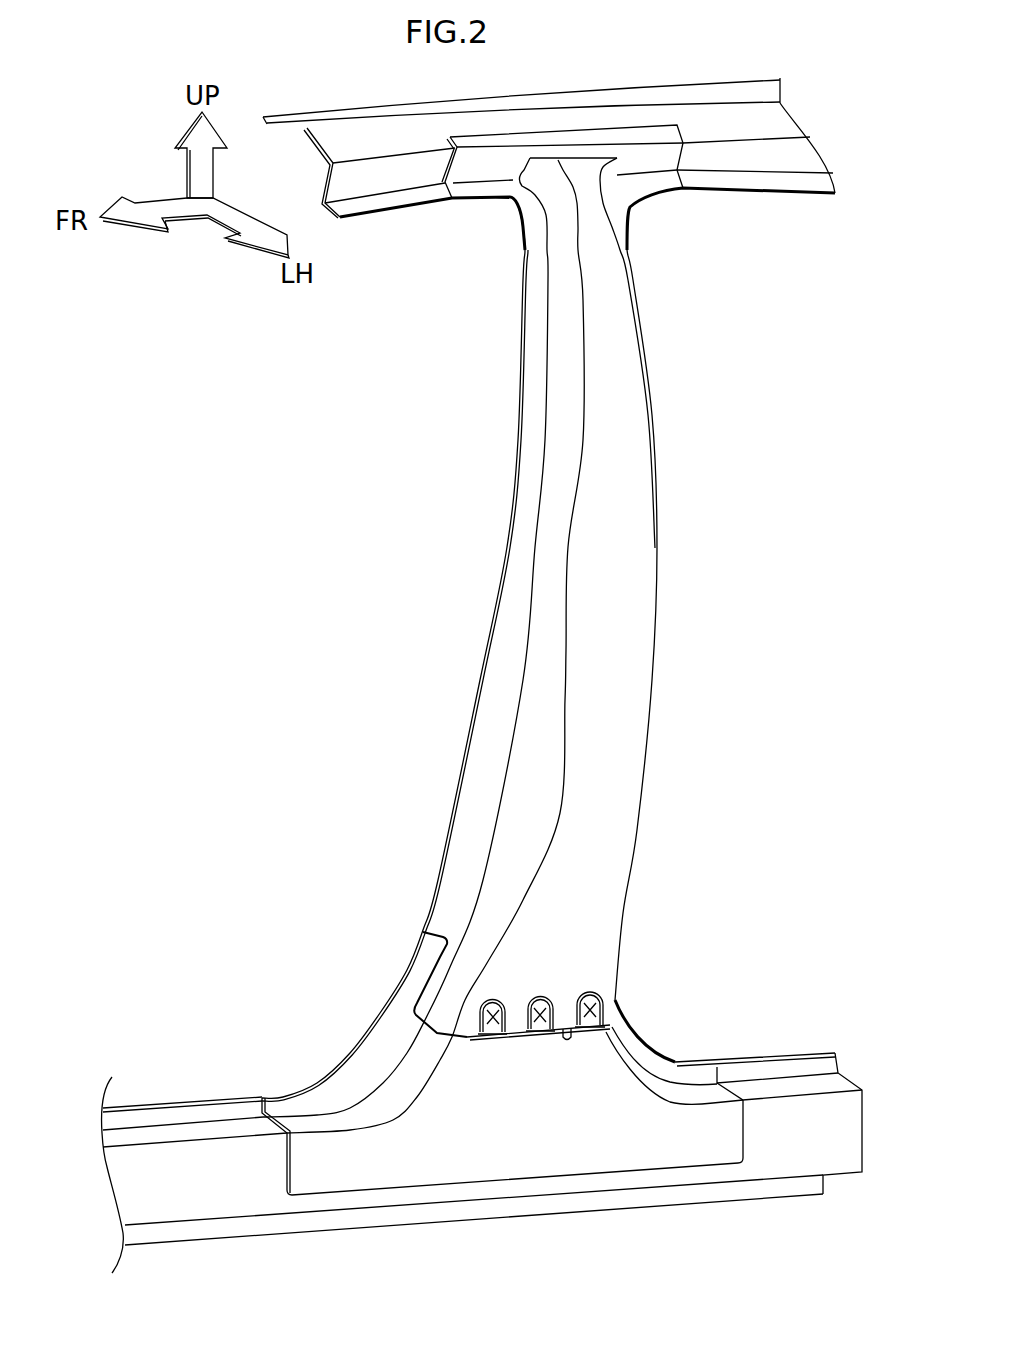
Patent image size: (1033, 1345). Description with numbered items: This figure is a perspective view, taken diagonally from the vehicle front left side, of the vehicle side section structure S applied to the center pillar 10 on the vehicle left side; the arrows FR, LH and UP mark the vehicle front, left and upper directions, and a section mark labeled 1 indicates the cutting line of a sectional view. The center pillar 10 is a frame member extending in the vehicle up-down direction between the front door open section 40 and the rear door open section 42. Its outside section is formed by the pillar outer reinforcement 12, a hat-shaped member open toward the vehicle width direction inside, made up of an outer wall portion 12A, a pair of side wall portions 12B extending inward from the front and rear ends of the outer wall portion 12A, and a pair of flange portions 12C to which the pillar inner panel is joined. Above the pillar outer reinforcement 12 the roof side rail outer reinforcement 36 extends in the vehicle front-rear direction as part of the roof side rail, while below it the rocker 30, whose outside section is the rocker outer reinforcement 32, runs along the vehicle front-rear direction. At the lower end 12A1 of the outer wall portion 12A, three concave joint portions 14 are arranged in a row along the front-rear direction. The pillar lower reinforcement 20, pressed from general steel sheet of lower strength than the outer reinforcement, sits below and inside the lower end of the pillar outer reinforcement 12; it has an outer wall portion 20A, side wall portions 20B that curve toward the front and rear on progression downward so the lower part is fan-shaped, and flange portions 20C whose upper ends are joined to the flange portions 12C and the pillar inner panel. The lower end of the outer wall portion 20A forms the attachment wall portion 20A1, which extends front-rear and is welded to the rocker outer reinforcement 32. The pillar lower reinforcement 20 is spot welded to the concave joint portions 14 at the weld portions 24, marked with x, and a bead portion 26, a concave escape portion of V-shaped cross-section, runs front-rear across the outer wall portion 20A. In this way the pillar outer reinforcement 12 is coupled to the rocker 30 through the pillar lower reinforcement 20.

The center pillar 10 is at (668, 473).
The pillar outer reinforcement 12 is at (655, 662).
The outer wall portion 12A is at (632, 577).
The lower end 12A1 is at (567, 1030).
The side wall portions 12B is at (552, 555).
The flange portions 12C is at (530, 437).
The concave joint portions 14 is at (540, 1000).
The pillar lower reinforcement 20 is at (478, 1192).
The outer wall portion 20A is at (643, 1043).
The attachment wall portion 20A1 is at (598, 1152).
The side wall portions 20B is at (420, 1050).
The flange portions 20C is at (360, 1070).
The weld portions 24 is at (473, 1017).
The bead portion 26 is at (567, 1042).
The rocker 30 is at (137, 1100).
The rocker outer reinforcement 32 is at (142, 1183).
The roof side rail outer reinforcement 36 is at (683, 90).
The front door open section 40 is at (288, 593).
The rear door open section 42 is at (838, 507).
The vehicle side section structure S is at (687, 937).
The section line of FIG. 1 is at (497, 963).